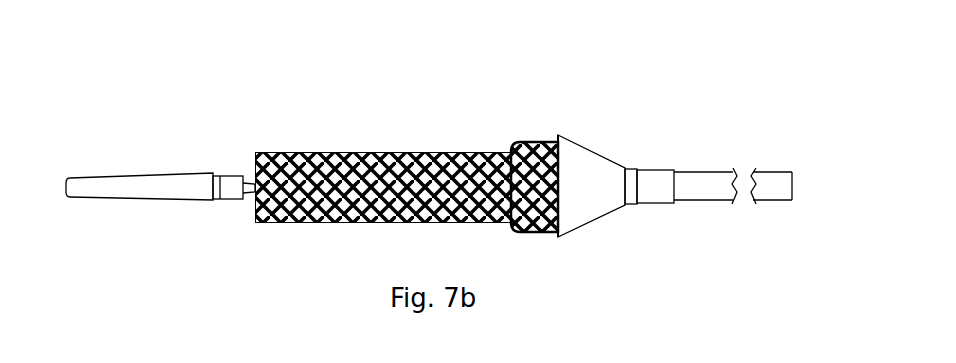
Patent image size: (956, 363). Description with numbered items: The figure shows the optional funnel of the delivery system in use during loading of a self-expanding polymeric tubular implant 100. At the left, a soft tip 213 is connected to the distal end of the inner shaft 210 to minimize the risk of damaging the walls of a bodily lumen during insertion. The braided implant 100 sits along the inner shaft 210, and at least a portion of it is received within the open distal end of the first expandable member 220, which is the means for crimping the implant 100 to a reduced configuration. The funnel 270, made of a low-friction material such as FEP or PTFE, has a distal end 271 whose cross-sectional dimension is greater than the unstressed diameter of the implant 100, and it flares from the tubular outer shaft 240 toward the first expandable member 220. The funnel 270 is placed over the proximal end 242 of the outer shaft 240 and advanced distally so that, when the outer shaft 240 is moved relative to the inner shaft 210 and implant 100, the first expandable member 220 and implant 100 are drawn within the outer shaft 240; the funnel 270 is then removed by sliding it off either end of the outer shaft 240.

The polymeric tubular implant 100 is at (313, 146).
The soft tip 213 is at (176, 163).
The inner shaft 210 is at (250, 198).
The first expandable member 220 is at (530, 140).
The funnel 270 is at (603, 152).
The distal end of funnel 271 is at (561, 133).
The tubular outer shaft 240 is at (715, 168).
The proximal end of outer shaft 242 is at (792, 201).